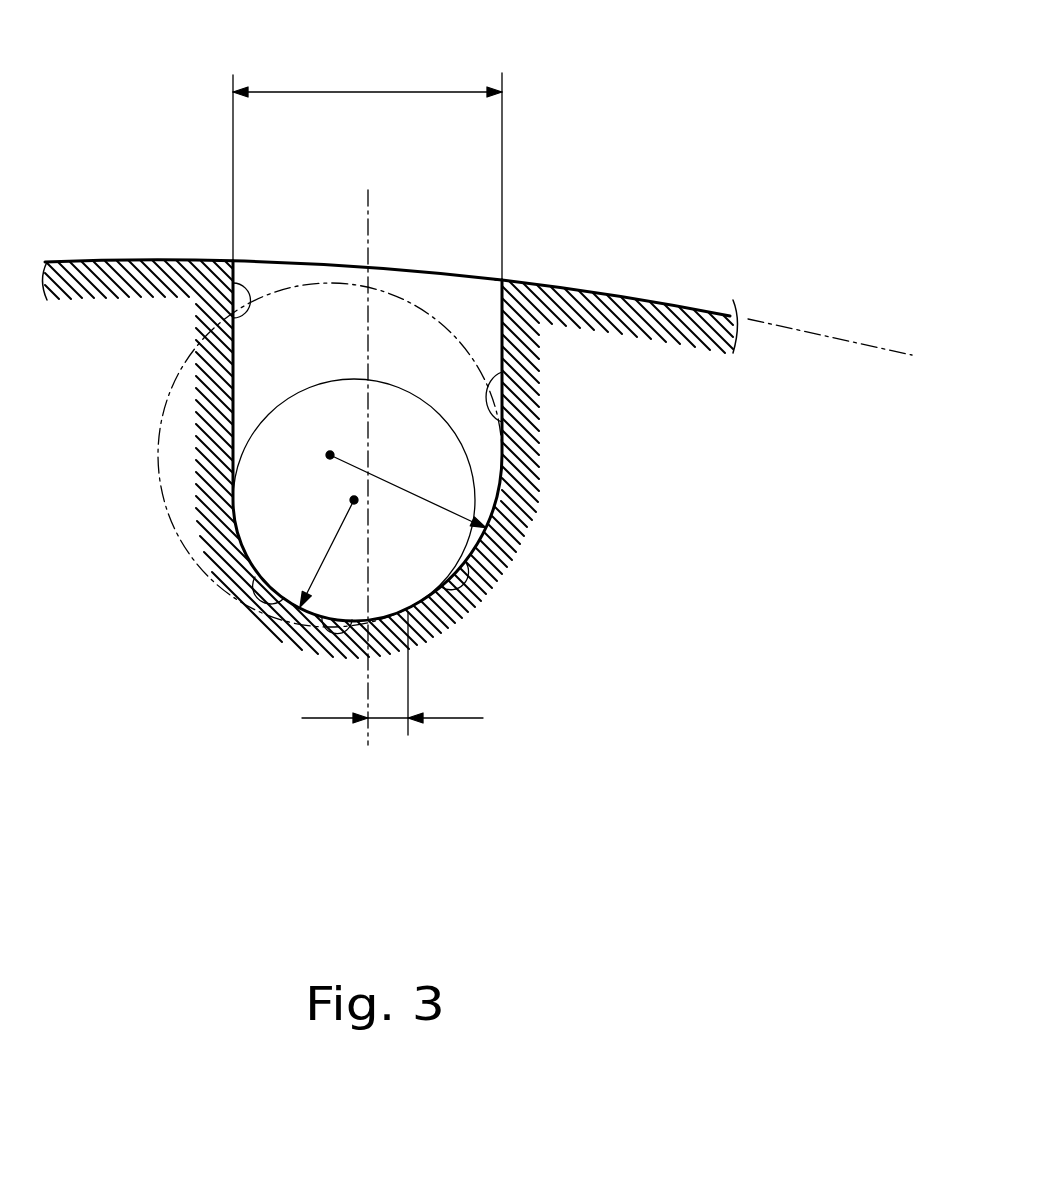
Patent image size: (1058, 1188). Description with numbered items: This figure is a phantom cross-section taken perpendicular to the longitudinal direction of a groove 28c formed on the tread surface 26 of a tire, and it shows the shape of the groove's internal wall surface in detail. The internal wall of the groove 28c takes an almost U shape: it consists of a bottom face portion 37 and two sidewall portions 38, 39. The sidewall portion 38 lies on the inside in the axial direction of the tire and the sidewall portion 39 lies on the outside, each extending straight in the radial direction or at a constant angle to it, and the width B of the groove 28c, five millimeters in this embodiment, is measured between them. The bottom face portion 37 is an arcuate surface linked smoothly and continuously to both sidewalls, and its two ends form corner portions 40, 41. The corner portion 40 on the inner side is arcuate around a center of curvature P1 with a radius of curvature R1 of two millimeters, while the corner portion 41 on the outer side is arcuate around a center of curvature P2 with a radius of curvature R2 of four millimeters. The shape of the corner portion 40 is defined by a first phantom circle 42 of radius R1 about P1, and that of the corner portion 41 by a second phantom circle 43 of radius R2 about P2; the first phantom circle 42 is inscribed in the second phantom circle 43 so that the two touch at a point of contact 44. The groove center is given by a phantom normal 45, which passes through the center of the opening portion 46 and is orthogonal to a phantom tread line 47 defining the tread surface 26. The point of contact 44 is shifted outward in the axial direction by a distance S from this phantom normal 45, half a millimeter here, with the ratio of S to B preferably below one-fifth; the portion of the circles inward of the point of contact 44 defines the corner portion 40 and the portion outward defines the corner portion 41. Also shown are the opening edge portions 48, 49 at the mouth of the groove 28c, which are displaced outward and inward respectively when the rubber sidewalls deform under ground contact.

The tread surface 26 is at (102, 261).
The groove 28c is at (517, 150).
The bottom face portion 37 is at (330, 628).
The sidewall portion 38 is at (233, 318).
The sidewall portion 39 is at (502, 422).
The corner portion 40 is at (262, 583).
The corner portion 41 is at (478, 560).
The first phantom circle 42 is at (195, 403).
The second phantom circle 43 is at (558, 279).
The point of contact 44 is at (452, 627).
The phantom normal 45 is at (365, 198).
The opening portion 46 is at (385, 258).
The phantom tread line 47 is at (858, 318).
The opening edge portion 48 is at (235, 261).
The opening edge portion 49 is at (502, 278).
The width of the groove B is at (367, 164).
The distance S is at (398, 722).
The center of curvature P1 is at (331, 498).
The center of curvature P2 is at (310, 433).
The radius of curvature R1 is at (235, 508).
The radius of curvature R2 is at (495, 525).